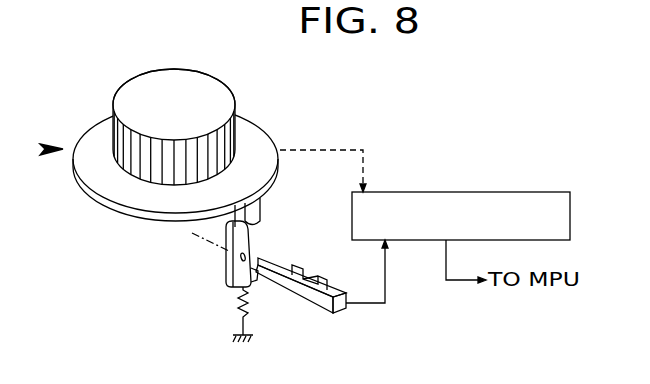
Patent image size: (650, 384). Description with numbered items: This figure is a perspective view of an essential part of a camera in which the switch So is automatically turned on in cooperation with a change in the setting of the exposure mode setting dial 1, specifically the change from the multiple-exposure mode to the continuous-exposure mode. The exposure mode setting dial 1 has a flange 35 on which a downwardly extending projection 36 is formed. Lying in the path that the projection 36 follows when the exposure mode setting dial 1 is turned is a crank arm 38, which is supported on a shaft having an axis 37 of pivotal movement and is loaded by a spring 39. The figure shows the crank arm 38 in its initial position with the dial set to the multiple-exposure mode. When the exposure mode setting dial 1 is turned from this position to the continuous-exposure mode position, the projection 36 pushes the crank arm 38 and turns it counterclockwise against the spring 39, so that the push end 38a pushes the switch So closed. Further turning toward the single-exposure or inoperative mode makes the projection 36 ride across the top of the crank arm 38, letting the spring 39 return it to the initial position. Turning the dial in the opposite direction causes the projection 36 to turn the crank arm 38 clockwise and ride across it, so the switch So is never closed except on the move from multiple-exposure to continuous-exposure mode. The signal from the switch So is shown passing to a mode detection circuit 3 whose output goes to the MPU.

The exposure mode setting dial 1 is at (207, 88).
The flange 35 is at (115, 205).
The projection 36 is at (257, 213).
The axis of pivotal movement 37 is at (206, 242).
The crank arm 38 is at (228, 278).
The push end 38a is at (258, 277).
The spring 39 is at (236, 311).
The switch So is at (306, 258).
The mode detection circuit 3 is at (456, 191).